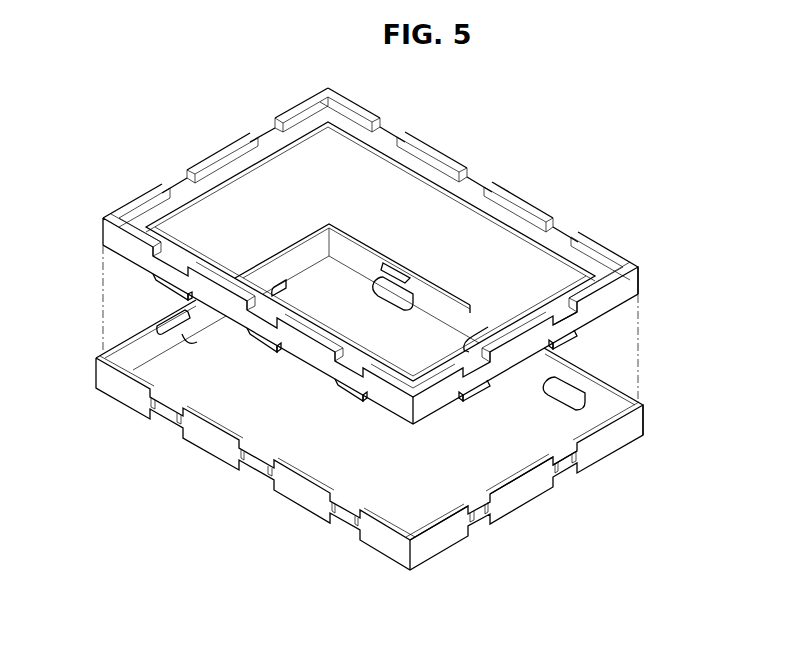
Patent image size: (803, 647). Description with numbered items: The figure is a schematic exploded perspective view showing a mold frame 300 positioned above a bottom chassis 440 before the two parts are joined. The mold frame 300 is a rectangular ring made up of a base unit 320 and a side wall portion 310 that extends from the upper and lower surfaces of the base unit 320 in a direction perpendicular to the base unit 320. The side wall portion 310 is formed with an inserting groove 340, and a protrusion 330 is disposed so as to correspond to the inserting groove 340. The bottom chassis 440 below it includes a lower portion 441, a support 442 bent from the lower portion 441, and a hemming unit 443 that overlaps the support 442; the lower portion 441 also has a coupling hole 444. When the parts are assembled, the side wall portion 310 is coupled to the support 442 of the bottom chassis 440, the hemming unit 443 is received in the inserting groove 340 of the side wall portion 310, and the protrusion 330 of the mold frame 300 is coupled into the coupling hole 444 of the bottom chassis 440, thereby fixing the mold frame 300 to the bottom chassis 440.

The mold frame 300 is at (432, 256).
The side wall portion 310 is at (607, 298).
The base unit 320 is at (587, 272).
The protrusion 330 is at (568, 340).
The inserting groove 340 is at (568, 308).
The bottom chassis 440 is at (369, 426).
The lower portion 441 is at (462, 480).
The support 442 is at (528, 490).
The hemming unit 443 is at (572, 448).
The coupling hole 444 is at (570, 478).